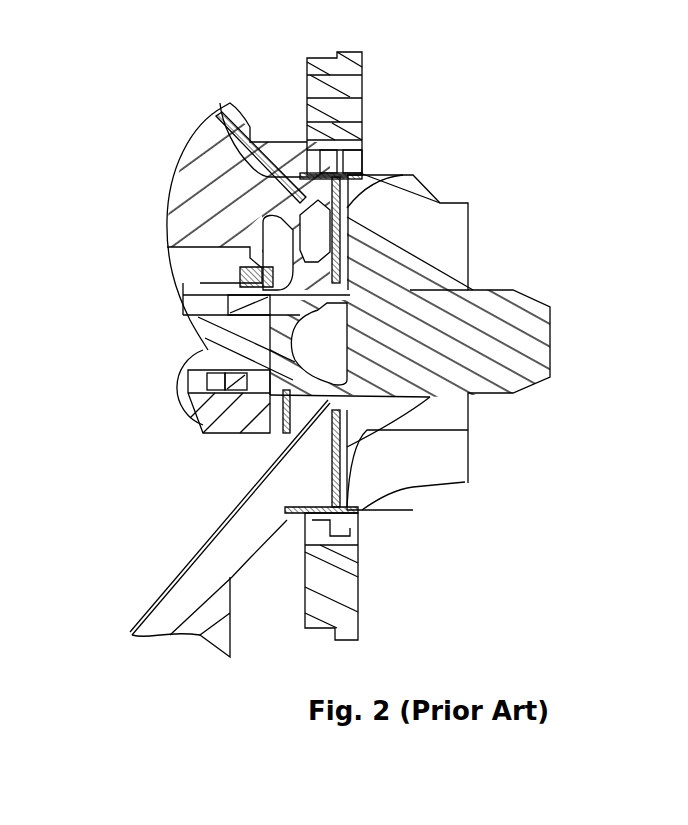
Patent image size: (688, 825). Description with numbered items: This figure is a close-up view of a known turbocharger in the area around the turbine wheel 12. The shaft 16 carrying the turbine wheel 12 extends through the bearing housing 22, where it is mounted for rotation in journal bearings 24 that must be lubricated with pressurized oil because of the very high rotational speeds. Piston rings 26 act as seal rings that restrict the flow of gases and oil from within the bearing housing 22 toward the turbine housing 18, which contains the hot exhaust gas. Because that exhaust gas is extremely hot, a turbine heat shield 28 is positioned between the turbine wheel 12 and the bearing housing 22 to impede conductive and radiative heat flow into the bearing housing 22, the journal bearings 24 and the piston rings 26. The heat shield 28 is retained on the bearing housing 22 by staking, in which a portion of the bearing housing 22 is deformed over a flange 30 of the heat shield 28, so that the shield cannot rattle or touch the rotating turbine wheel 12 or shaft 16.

The turbine wheel 12 is at (463, 322).
The shaft 16 is at (203, 352).
The turbine housing 18 is at (362, 70).
The bearing housing 22 is at (177, 177).
The journal bearings 24 is at (203, 413).
The piston rings 26 is at (468, 433).
The turbine heat shield 28 is at (357, 207).
The flange 30 is at (223, 105).